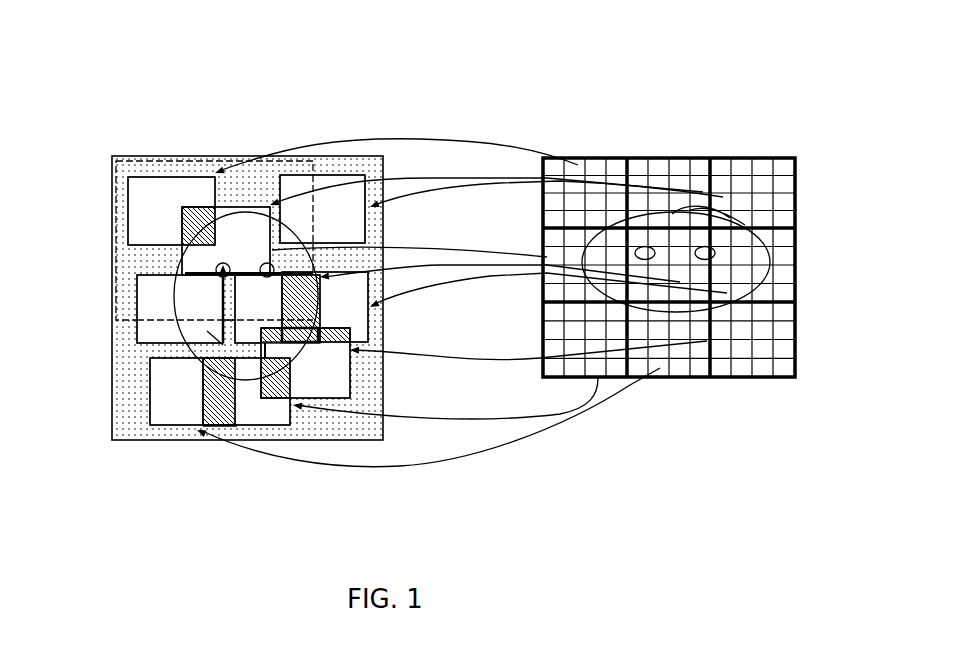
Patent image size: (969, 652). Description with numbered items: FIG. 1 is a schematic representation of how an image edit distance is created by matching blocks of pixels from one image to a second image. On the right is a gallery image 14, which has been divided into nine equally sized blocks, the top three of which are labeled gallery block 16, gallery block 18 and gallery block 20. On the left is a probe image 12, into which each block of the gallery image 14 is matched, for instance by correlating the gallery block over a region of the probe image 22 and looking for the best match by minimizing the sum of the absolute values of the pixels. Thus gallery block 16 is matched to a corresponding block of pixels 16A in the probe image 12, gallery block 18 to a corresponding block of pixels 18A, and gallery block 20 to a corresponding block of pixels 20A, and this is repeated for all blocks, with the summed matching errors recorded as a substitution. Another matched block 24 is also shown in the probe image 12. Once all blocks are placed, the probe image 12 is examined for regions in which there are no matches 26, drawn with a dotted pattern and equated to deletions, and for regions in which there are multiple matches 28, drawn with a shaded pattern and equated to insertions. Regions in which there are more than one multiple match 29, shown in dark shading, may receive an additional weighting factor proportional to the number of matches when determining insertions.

The probe image 12 is at (165, 440).
The gallery image 14 is at (655, 380).
The gallery block 16 is at (578, 165).
The gallery block 18 is at (693, 165).
The gallery block 20 is at (785, 175).
The corresponding block of pixels 16A is at (157, 178).
The corresponding block of pixels 18A is at (253, 208).
The corresponding block of pixels 20A is at (337, 173).
The region of the probe image 22 is at (307, 163).
The sensor element 24 is at (158, 408).
The regions in which there are no matches 26 is at (135, 363).
The regions in which there are multiple matches 28 is at (270, 206).
The regions in which there are more than one multiple match 29 is at (303, 330).